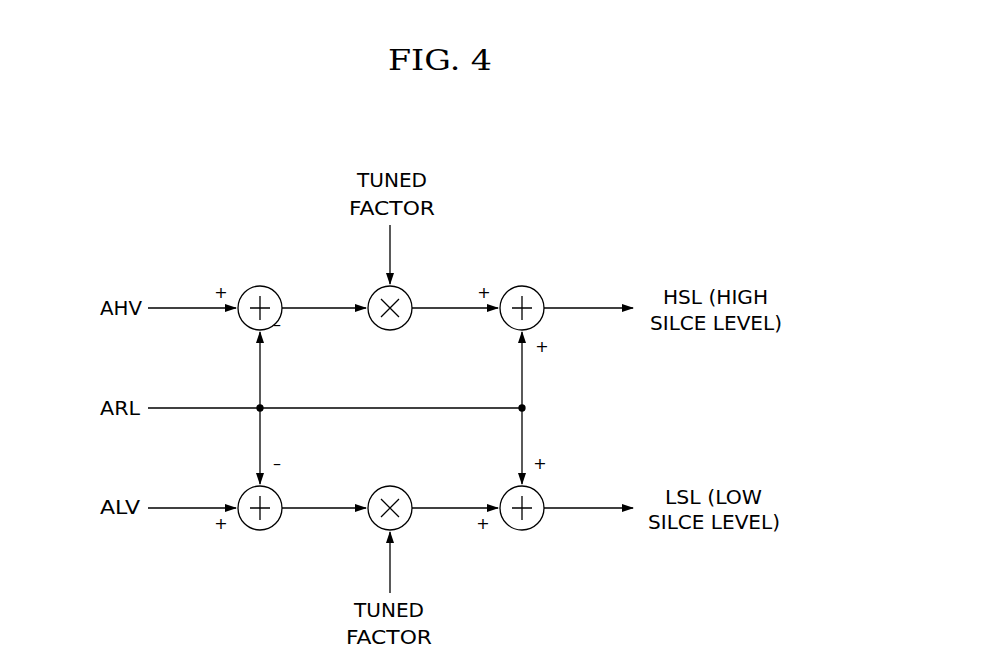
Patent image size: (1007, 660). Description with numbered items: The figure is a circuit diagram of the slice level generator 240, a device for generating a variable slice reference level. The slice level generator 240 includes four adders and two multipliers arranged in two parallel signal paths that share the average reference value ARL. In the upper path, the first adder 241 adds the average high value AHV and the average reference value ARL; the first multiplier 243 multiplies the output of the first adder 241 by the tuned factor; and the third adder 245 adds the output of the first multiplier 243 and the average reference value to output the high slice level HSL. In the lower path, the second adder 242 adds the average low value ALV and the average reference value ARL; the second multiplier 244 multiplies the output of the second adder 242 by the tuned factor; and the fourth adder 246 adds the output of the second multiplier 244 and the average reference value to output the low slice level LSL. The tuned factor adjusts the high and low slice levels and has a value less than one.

The slice level generator 240 is at (660, 218).
The first adder 241 is at (260, 286).
The second adder 242 is at (260, 530).
The first multiplier 243 is at (390, 330).
The second multiplier 244 is at (390, 486).
The third adder 245 is at (522, 286).
The fourth adder 246 is at (522, 530).